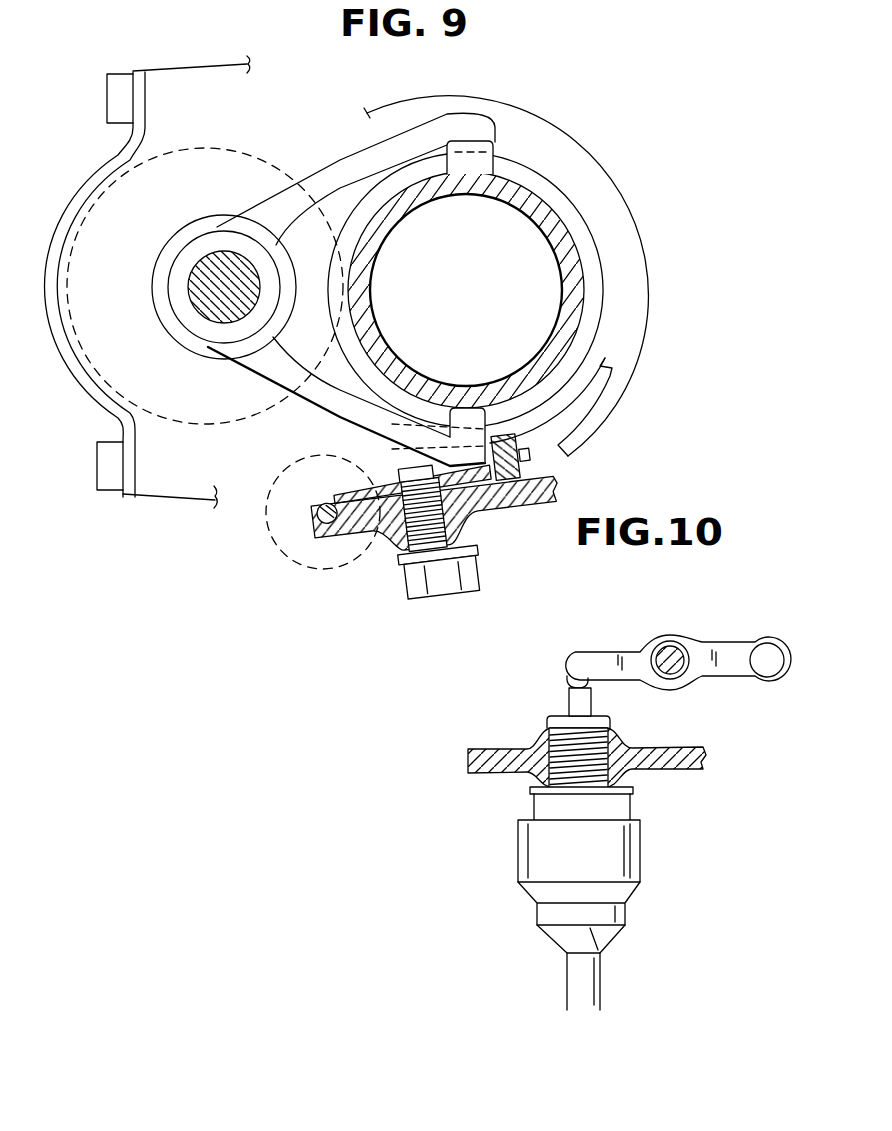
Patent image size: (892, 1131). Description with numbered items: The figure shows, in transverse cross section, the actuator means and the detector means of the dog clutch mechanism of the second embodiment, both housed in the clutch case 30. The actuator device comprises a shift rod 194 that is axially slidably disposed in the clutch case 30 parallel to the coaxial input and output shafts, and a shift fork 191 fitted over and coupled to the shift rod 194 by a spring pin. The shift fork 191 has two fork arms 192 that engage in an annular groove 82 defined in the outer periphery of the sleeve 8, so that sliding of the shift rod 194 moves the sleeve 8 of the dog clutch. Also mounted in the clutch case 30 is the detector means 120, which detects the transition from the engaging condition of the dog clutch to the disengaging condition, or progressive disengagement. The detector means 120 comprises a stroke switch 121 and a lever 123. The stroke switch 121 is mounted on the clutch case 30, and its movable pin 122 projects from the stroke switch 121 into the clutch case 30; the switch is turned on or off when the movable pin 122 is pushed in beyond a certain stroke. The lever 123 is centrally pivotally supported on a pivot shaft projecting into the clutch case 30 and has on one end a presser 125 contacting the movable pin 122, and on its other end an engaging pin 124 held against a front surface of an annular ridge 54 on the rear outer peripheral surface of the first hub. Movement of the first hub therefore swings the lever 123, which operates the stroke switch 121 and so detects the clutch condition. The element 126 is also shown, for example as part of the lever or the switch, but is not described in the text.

In FIG. 9, the sleeve 8 is at (552, 232).
In FIG. 9, the clutch case 30 is at (488, 511).
In FIG. 10, the clutch case 30 is at (681, 760).
In FIG. 9, the annular ridge 54 is at (577, 398).
In FIG. 9, the annular groove 82 is at (573, 211).
In FIG. 9, the detector means 120 is at (332, 572).
In FIG. 9, the stroke switch 121 is at (268, 540).
In FIG. 10, the stroke switch 121 is at (520, 856).
In FIG. 9, the movable pin 122 is at (325, 503).
In FIG. 10, the movable pin 122 is at (578, 695).
In FIG. 9, the lever 123 is at (374, 548).
In FIG. 10, the lever 123 is at (640, 656).
In FIG. 9, the engaging pin 124 is at (520, 452).
In FIG. 10, the engaging pin 124 is at (768, 656).
In FIG. 10, the presser 125 is at (572, 678).
In FIG. 9, the hole 126 is at (444, 577).
In FIG. 10, the hole 126 is at (672, 645).
In FIG. 9, the shift fork 191 is at (185, 262).
In FIG. 9, the fork arms 192 is at (460, 160).
In FIG. 9, the shift rod 194 is at (185, 289).